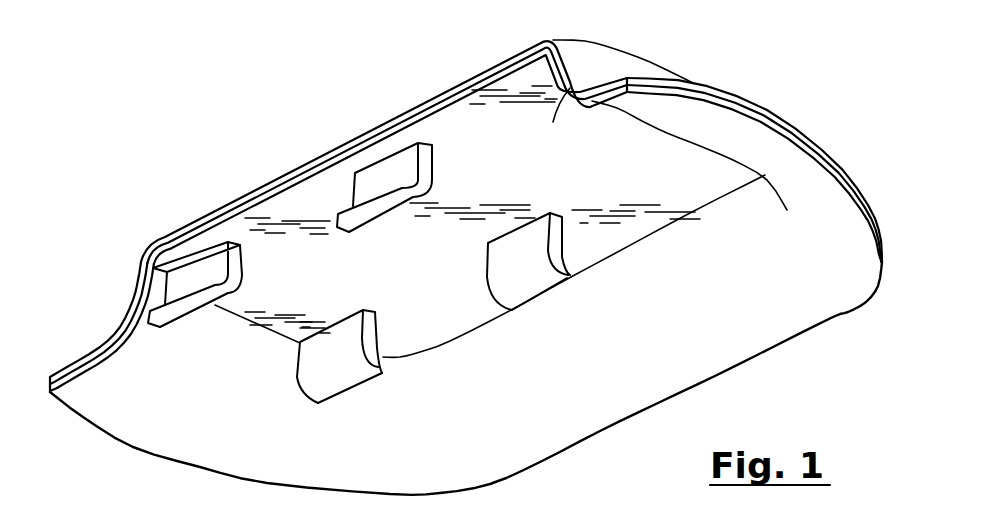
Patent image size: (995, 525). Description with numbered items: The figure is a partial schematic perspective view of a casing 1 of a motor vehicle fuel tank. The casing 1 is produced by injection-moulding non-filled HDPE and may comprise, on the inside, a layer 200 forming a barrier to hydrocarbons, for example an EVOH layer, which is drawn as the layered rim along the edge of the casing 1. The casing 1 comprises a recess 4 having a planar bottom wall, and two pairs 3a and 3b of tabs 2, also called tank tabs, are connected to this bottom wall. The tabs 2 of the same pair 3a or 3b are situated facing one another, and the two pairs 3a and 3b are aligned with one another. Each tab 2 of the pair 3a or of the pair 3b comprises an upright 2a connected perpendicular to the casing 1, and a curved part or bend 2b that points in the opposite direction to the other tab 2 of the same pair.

The casing 1 is at (462, 247).
The layer 200 is at (147, 245).
The tab 2 is at (340, 249).
The upright 2a is at (197, 260).
The bend 2b is at (157, 309).
The pair of tabs 3a is at (368, 405).
The pair of tabs 3b is at (552, 303).
The recess 4 is at (575, 82).